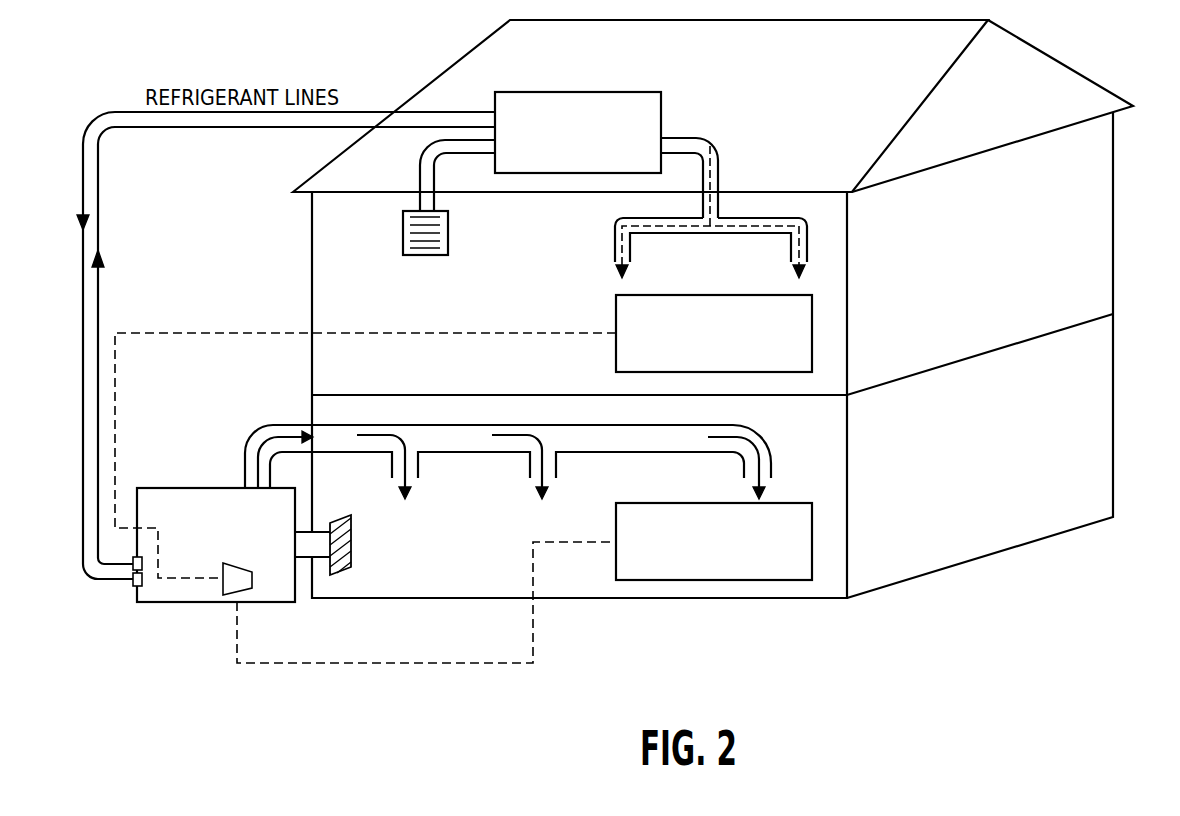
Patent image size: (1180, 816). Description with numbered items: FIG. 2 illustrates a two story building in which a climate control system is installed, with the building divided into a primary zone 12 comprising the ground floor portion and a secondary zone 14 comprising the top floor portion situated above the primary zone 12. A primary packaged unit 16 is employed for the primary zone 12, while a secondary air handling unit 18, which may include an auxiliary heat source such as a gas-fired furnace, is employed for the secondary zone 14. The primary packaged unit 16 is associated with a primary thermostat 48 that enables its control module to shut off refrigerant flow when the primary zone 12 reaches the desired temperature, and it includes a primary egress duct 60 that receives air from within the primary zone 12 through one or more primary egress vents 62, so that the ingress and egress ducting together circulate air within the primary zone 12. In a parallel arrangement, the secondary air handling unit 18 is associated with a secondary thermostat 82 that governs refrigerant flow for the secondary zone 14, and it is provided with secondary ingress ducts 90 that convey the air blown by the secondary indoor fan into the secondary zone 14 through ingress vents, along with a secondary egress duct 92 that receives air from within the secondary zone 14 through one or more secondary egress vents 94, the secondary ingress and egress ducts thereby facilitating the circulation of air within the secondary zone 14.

The primary zone 12 is at (1100, 428).
The secondary zone 14 is at (1100, 218).
The primary packaged unit 16 is at (197, 488).
The secondary air handling unit 18 is at (661, 115).
The primary thermostat 48 is at (812, 537).
The primary egress duct 60 is at (300, 558).
The primary egress vents 62 is at (351, 545).
The secondary thermostat 82 is at (812, 335).
The secondary ingress ducts 90 is at (720, 165).
The secondary egress duct 92 is at (420, 168).
The secondary egress vents 94 is at (448, 230).